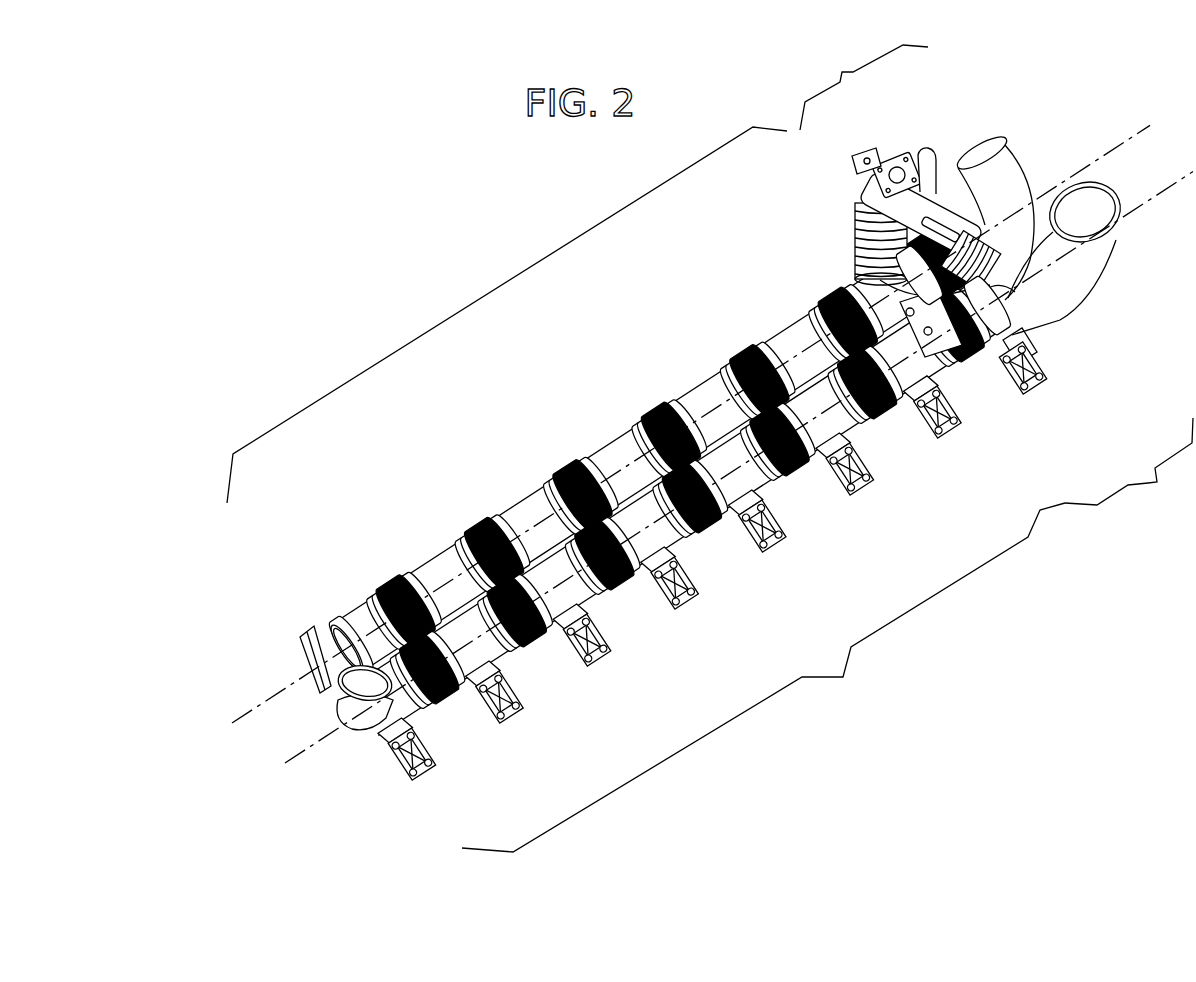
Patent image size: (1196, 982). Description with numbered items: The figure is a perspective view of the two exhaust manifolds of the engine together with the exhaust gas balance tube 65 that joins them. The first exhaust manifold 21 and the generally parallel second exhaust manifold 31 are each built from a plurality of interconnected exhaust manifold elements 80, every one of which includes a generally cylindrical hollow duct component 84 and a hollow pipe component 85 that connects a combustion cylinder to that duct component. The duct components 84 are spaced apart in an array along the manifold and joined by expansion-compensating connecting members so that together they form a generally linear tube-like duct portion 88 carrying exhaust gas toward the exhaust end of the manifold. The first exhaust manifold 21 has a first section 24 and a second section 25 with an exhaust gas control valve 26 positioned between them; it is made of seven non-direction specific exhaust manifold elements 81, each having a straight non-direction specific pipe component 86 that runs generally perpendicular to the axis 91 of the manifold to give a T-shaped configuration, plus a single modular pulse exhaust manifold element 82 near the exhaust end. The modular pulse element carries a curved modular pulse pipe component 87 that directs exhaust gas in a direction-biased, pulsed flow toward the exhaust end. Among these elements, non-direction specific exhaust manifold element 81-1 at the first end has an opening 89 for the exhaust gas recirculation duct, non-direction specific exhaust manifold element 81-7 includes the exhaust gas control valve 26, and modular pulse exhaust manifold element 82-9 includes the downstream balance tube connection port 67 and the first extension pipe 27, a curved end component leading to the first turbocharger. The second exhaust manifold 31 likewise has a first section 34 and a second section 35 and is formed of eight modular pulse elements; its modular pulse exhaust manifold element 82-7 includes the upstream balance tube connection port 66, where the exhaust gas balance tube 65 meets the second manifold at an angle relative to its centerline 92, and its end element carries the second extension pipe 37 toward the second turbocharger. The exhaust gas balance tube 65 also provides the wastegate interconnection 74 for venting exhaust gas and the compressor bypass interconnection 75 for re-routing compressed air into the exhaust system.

The first exhaust manifold 21 is at (1013, 453).
The first section 24 is at (763, 677).
The second section 25 is at (1129, 461).
The exhaust gas control valve 26 is at (945, 335).
The first extension pipe 27 is at (1078, 258).
The second exhaust manifold 31 is at (347, 530).
The first section 34 is at (507, 315).
The second section 35 is at (864, 87).
The second extension pipe 37 is at (1005, 170).
The exhaust gas balance tube 65 is at (862, 190).
The upstream balance tube connection port 66 is at (838, 252).
The downstream balance tube connection port 67 is at (1022, 292).
The wastegate interconnection 74 is at (888, 160).
The compressor bypass interconnection 75 is at (932, 150).
The exhaust manifold elements 80 is at (578, 328).
The non-direction specific exhaust manifold elements 81 is at (510, 745).
The non-direction specific exhaust manifold element 81-1 is at (357, 712).
The non-direction specific exhaust manifold element 81-7 is at (918, 430).
The modular pulse exhaust manifold element 82 is at (425, 530).
The modular pulse exhaust manifold element 82-7 is at (772, 285).
The modular pulse exhaust manifold element 82-9 is at (993, 368).
The duct component 84 is at (792, 330).
The hollow pipe component 85 is at (672, 596).
The non-direction specific pipe component 86 is at (963, 393).
The modular pulse pipe component 87 is at (310, 632).
The tube-like duct portion 88 is at (372, 576).
The opening 89 is at (355, 685).
The axis 91 is at (296, 762).
The centerline 92 is at (262, 700).